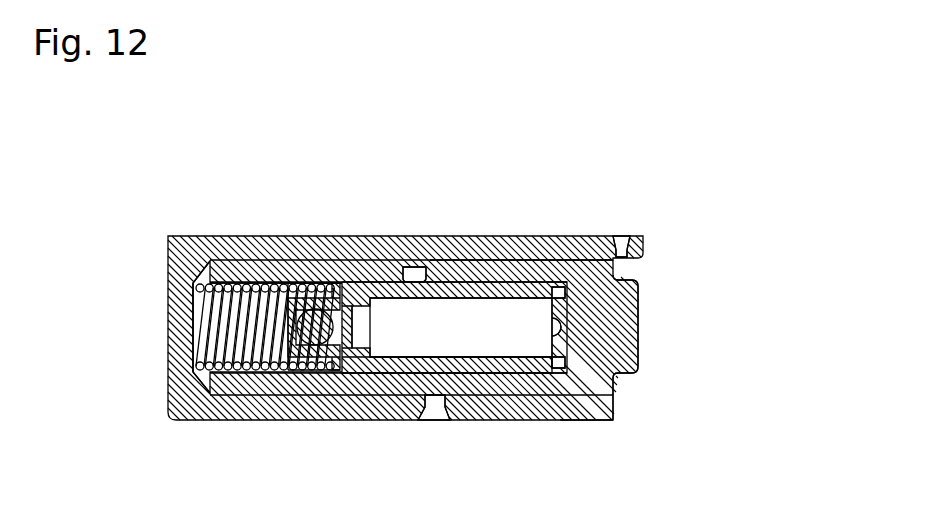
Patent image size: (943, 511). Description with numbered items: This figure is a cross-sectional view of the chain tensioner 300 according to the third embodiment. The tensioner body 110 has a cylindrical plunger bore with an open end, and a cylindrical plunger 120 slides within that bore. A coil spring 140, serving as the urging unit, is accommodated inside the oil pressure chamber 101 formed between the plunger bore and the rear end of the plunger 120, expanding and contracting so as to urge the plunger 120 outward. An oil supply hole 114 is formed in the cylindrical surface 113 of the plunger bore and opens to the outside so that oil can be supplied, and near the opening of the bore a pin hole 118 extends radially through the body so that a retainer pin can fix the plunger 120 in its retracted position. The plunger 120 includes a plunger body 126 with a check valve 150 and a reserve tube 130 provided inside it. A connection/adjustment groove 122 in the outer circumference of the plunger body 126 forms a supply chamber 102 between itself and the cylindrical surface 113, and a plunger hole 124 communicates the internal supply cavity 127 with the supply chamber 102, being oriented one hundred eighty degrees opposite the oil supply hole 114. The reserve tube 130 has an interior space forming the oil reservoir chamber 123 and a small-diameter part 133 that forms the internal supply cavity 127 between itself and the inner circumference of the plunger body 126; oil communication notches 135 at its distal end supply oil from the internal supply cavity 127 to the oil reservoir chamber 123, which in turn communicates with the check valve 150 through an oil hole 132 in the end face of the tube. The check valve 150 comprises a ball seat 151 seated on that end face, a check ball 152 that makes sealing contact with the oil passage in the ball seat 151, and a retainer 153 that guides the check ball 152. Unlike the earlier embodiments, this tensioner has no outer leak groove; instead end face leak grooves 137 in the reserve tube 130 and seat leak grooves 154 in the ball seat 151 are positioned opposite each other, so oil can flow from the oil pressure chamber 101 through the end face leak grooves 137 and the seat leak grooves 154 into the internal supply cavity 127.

The chain tensioner 300 is at (138, 148).
The oil pressure chamber 101 is at (222, 327).
The supply chamber 102 is at (360, 300).
The tensioner body 110 is at (530, 237).
The cylindrical surface 113 is at (414, 273).
The oil supply hole 114 is at (433, 413).
The pin hole 118 is at (620, 233).
The plunger 120 is at (641, 335).
The connection/adjustment groove 122 is at (290, 262).
The oil reservoir chamber 123 is at (453, 318).
The plunger hole 124 is at (422, 262).
The plunger body 126 is at (568, 420).
The internal supply cavity 127 is at (602, 420).
The reserve tube 130 is at (403, 385).
The oil hole 132 is at (390, 364).
The small-diameter part 133 is at (506, 378).
The oil communication notches 135 is at (562, 362).
The end face leak grooves 137 is at (350, 282).
The coil spring 140 is at (226, 370).
The check valve 150 is at (262, 391).
The ball seat 151 is at (307, 350).
The check ball 152 is at (300, 330).
The retainer 153 is at (236, 358).
The seat leak grooves 154 is at (334, 283).